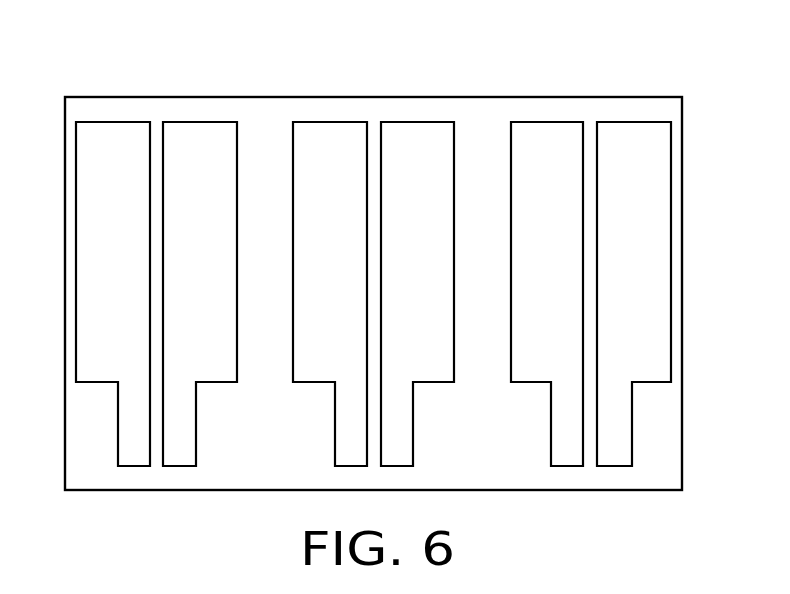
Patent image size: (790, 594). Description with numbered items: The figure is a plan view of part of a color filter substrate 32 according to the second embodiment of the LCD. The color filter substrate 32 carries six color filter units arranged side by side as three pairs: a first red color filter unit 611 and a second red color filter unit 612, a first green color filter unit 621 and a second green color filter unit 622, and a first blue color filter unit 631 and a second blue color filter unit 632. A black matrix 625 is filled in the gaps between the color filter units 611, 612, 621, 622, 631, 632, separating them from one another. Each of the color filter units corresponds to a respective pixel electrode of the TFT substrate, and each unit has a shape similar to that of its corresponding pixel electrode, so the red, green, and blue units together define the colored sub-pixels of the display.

The color filter substrate 32 is at (355, 31).
The first red color filter unit 611 is at (115, 137).
The second red color filter unit 612 is at (195, 137).
The first green color filter unit 621 is at (315, 137).
The second green color filter unit 622 is at (407, 137).
The black matrix 625 is at (472, 120).
The first blue color filter unit 631 is at (540, 137).
The second blue color filter unit 632 is at (632, 137).